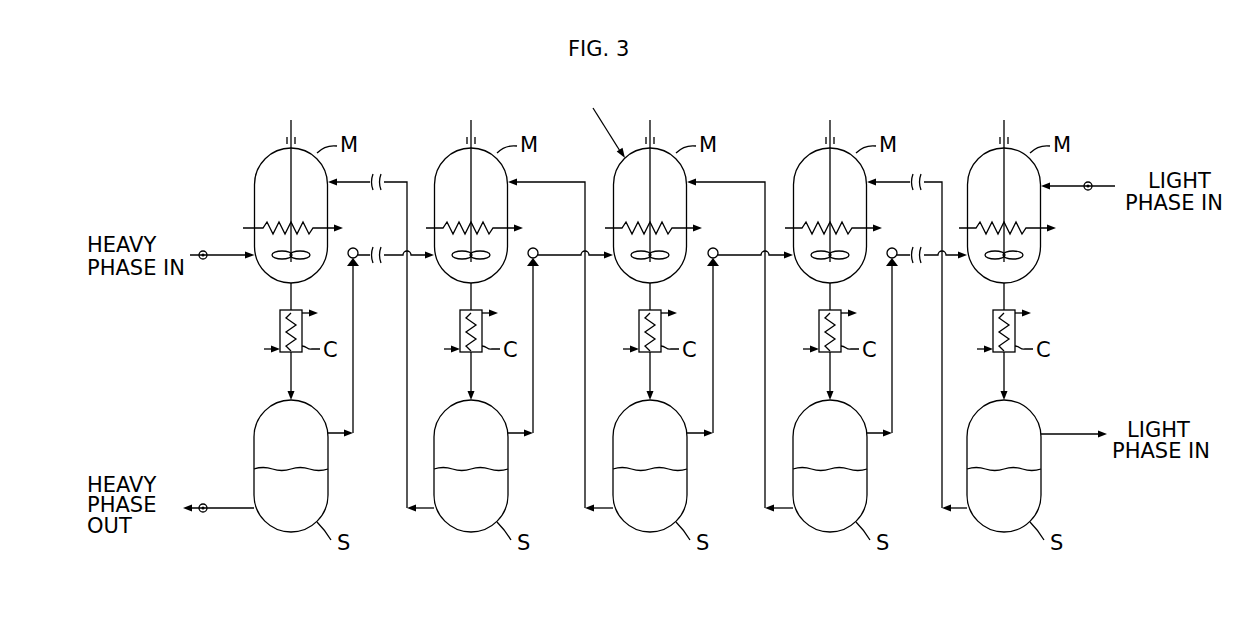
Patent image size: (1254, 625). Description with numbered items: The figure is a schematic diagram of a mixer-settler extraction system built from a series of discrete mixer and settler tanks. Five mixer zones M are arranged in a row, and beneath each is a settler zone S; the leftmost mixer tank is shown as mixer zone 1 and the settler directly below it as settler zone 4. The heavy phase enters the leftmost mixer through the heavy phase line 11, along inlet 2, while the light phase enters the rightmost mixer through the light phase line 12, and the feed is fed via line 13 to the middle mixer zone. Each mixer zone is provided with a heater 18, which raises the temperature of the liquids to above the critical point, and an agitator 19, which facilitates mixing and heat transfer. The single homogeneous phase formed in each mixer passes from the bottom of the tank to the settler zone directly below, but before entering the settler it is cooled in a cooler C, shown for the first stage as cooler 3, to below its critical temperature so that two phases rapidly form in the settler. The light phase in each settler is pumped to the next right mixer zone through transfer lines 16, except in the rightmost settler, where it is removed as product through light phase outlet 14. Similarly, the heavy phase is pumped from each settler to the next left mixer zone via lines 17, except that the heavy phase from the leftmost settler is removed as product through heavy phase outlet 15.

The mixer vessel 1 is at (291, 215).
The heavy phase inlet line 2 is at (222, 244).
The cooler 3 is at (279, 331).
The settler vessel 4 is at (291, 466).
The heavy phase line 11 is at (214, 268).
The light phase line 12 is at (1078, 200).
The feed line 13 is at (591, 120).
The light phase outlet 14 is at (1074, 451).
The heavy phase outlet 15 is at (218, 520).
The light phase transfer line with pump 16 is at (353, 391).
The heavy phase lines 17 is at (407, 482).
The heater 18 is at (244, 228).
The agitator 19 is at (292, 129).